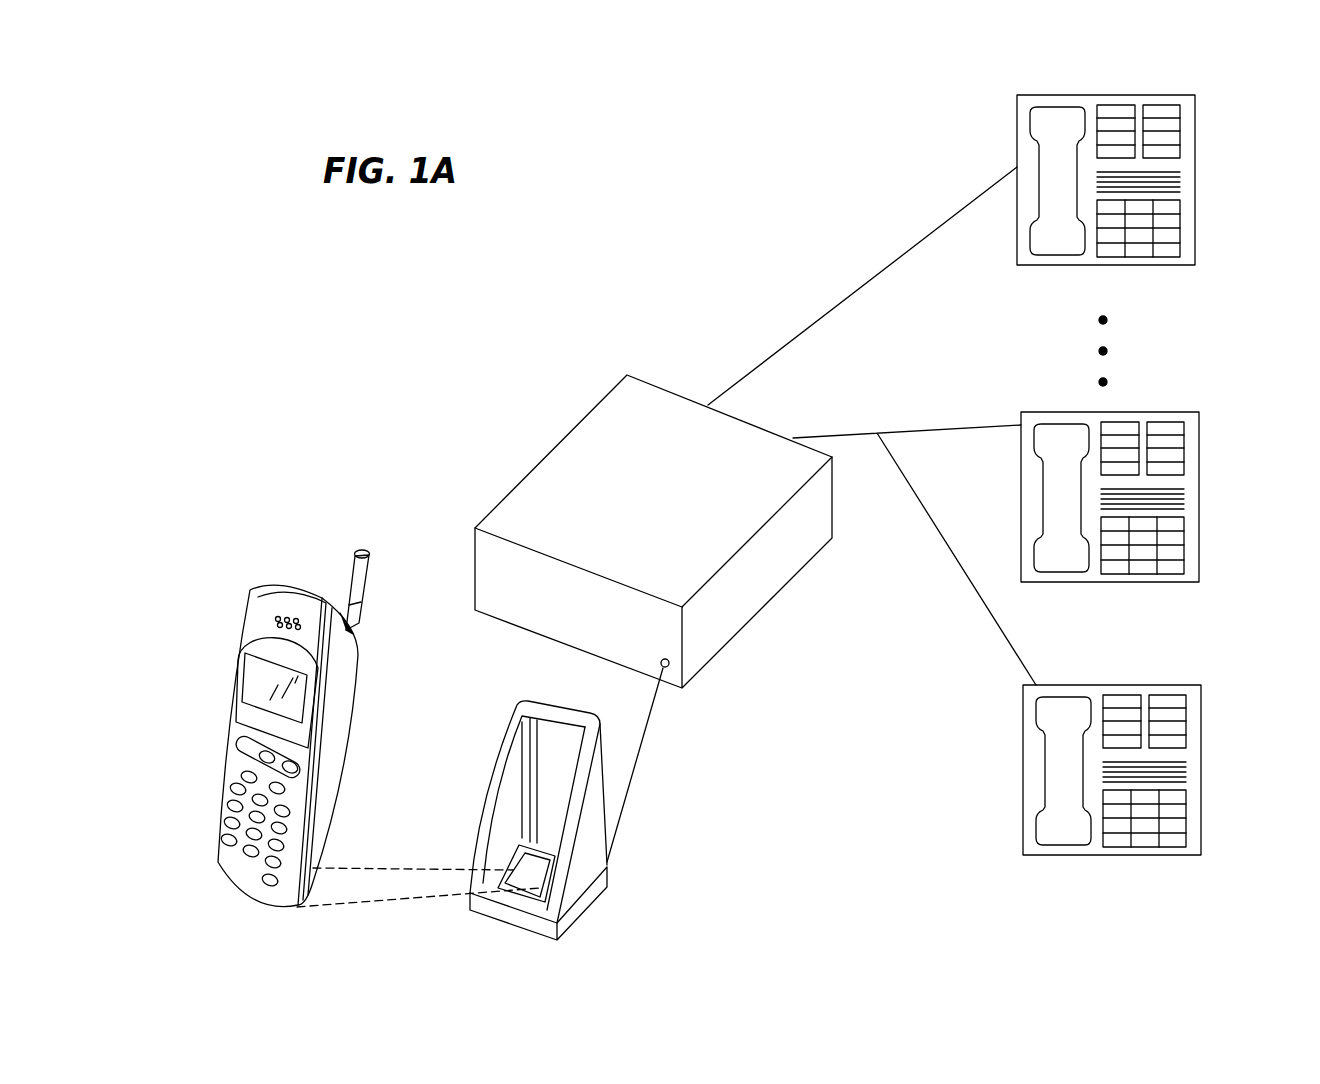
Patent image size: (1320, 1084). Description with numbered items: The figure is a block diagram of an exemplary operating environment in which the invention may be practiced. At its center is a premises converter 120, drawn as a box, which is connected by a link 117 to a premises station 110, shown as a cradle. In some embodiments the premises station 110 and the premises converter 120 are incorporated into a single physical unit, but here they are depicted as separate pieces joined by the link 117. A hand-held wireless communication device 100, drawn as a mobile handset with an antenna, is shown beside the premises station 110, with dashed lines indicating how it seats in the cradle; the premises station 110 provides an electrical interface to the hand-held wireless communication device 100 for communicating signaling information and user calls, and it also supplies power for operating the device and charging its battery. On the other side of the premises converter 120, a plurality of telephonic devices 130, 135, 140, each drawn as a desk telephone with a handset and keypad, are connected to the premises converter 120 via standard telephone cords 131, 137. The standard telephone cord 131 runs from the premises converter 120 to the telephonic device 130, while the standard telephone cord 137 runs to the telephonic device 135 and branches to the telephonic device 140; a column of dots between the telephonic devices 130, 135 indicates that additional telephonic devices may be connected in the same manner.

The hand-held wireless communication device 100 is at (362, 678).
The premises station 110 is at (492, 762).
The link 117 is at (641, 735).
The premises converter 120 is at (560, 442).
The telephonic device 130 is at (1195, 118).
The standard telephone cord 131 is at (802, 332).
The telephonic device 135 is at (1199, 422).
The standard telephone cord 137 is at (832, 436).
The telephonic device 140 is at (1201, 700).